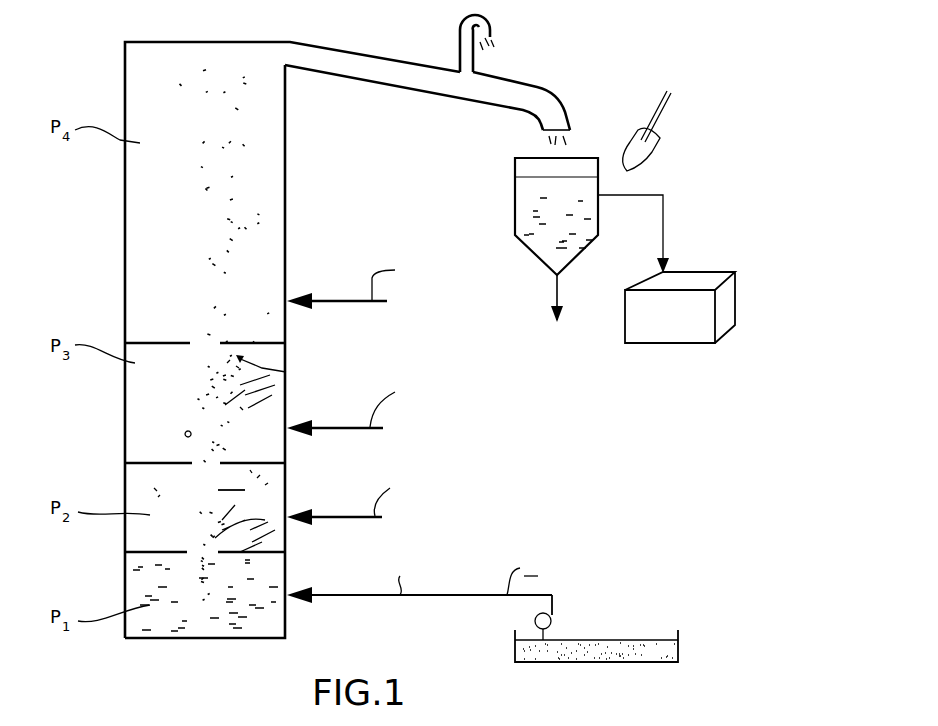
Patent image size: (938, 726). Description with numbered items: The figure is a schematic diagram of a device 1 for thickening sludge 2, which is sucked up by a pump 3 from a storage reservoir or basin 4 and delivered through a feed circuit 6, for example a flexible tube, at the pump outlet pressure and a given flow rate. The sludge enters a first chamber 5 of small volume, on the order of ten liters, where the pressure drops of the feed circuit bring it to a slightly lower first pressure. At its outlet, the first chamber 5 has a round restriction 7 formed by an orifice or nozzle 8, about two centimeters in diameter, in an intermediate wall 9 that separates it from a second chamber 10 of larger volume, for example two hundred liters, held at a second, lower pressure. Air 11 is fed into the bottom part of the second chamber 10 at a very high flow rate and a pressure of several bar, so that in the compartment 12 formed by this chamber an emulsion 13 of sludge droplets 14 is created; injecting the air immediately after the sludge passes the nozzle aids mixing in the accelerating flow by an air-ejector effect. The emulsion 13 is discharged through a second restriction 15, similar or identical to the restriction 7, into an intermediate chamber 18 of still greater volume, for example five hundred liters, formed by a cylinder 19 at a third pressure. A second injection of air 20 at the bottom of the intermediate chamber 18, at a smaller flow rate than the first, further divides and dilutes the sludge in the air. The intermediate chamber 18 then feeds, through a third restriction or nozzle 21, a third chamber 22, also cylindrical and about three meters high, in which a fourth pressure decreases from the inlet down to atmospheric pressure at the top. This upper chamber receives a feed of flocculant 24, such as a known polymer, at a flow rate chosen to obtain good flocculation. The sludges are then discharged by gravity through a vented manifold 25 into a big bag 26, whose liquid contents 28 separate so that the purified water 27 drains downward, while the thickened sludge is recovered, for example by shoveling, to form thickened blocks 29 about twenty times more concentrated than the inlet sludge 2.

The device 1 is at (358, 215).
The sludge 2 is at (620, 640).
The pump 3 is at (551, 623).
The storage reservoir or basin 4 is at (514, 650).
The first chamber 5 is at (197, 622).
The feed circuit 6 is at (447, 595).
The round restriction 7 is at (185, 547).
The orifice or nozzle 8 is at (288, 503).
The intermediate wall 9 is at (162, 553).
The second chamber 10 is at (178, 484).
The air 11 is at (348, 516).
The compartment 12 is at (231, 481).
The emulsion 13 is at (290, 478).
The sludge droplets 14 is at (184, 430).
The second restriction 15 is at (182, 455).
The intermediate chamber 18 is at (160, 398).
The cylinder 19 is at (288, 375).
The second injection of air 20 is at (328, 427).
The third restriction or nozzle 21 is at (182, 332).
The third chamber 22 is at (195, 228).
The feed of flocculant 24 is at (325, 300).
The vented manifold 25 is at (386, 66).
The big bag 26 is at (514, 167).
The purified water 27 is at (553, 290).
The collected liquid 28 is at (540, 212).
The thickened blocks 29 is at (673, 335).